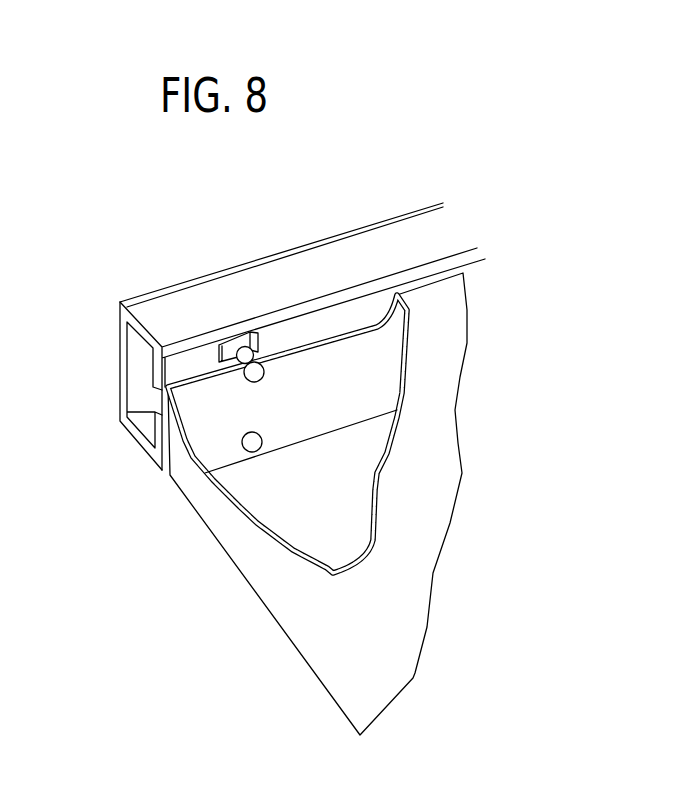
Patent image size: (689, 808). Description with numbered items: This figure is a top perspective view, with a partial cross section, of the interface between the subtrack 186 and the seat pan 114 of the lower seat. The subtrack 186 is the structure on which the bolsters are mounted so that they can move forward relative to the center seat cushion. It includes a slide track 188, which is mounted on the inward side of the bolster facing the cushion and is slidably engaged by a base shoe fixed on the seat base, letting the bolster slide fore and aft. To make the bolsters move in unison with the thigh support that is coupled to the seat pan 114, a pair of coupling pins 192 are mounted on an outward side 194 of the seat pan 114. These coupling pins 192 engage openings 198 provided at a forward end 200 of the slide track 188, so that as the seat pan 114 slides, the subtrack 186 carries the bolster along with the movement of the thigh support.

The seat pan 114 is at (283, 602).
The subtrack 186 is at (323, 268).
The slide track 188 is at (120, 328).
The coupling pins 192 is at (250, 446).
The outward side 194 is at (317, 422).
The openings 198 is at (237, 353).
The forward end 200 is at (195, 297).